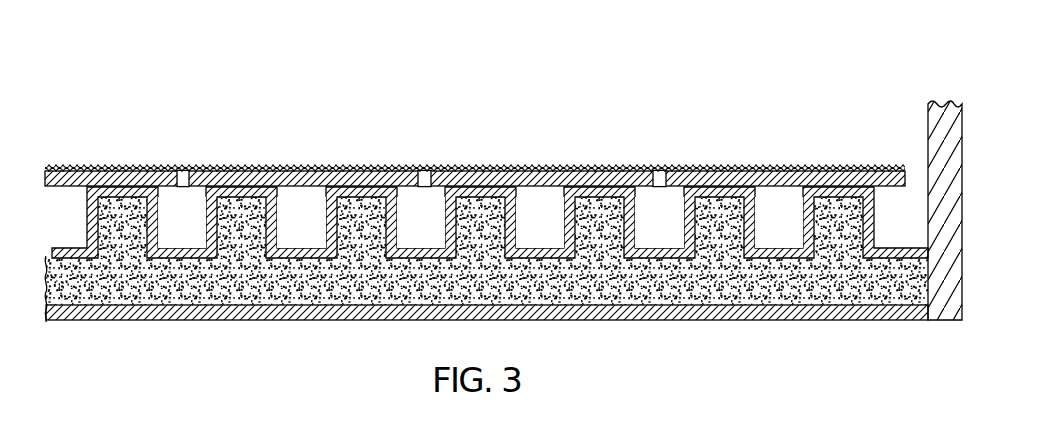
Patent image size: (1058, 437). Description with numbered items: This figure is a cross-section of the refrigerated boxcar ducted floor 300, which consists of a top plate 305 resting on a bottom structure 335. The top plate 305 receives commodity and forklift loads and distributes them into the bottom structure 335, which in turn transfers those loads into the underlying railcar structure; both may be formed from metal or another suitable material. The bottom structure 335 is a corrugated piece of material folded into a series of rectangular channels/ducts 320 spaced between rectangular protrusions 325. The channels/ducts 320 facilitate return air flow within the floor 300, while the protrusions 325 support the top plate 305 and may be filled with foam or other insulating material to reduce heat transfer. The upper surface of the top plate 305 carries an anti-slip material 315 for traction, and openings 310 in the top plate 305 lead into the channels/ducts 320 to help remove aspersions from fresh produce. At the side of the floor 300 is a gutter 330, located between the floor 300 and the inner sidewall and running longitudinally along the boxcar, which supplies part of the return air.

The refrigerated boxcar ducted floor 300 is at (674, 38).
The top plate 305 is at (795, 171).
The openings 310 is at (178, 167).
The anti-slip material 315 is at (103, 167).
The channels/ducts 320 is at (182, 223).
The protrusions 325 is at (241, 232).
The gutters 330 is at (915, 200).
The bottom structure 335 is at (300, 253).